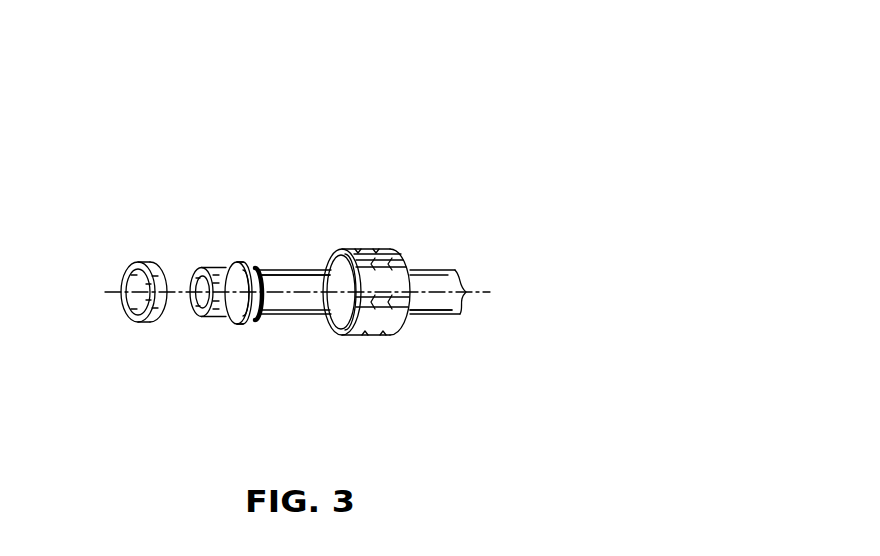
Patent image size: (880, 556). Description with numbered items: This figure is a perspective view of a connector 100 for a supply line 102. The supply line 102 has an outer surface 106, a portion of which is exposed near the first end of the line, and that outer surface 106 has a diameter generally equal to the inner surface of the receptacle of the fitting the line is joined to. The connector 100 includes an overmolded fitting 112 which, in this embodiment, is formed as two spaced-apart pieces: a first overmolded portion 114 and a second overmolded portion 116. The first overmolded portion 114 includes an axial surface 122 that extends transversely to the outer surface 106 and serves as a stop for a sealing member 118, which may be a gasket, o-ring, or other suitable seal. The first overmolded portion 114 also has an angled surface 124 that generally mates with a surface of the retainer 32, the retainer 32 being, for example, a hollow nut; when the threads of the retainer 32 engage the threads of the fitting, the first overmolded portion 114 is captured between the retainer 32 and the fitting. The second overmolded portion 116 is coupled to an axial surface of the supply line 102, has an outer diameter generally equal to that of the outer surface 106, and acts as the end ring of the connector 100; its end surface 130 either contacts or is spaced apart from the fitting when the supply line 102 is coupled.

The connector 100 is at (368, 110).
The supply line 102 is at (450, 258).
The outer surface 106 is at (237, 302).
The overmolded fitting 112 is at (225, 212).
The first overmolded portion 114 is at (250, 258).
The second overmolded portion 116 is at (195, 267).
The sealing member 118 is at (130, 258).
The axial surface 122 is at (245, 323).
The angled surface 124 is at (263, 297).
The end surface 130 is at (196, 313).
The retainer 32 is at (373, 243).